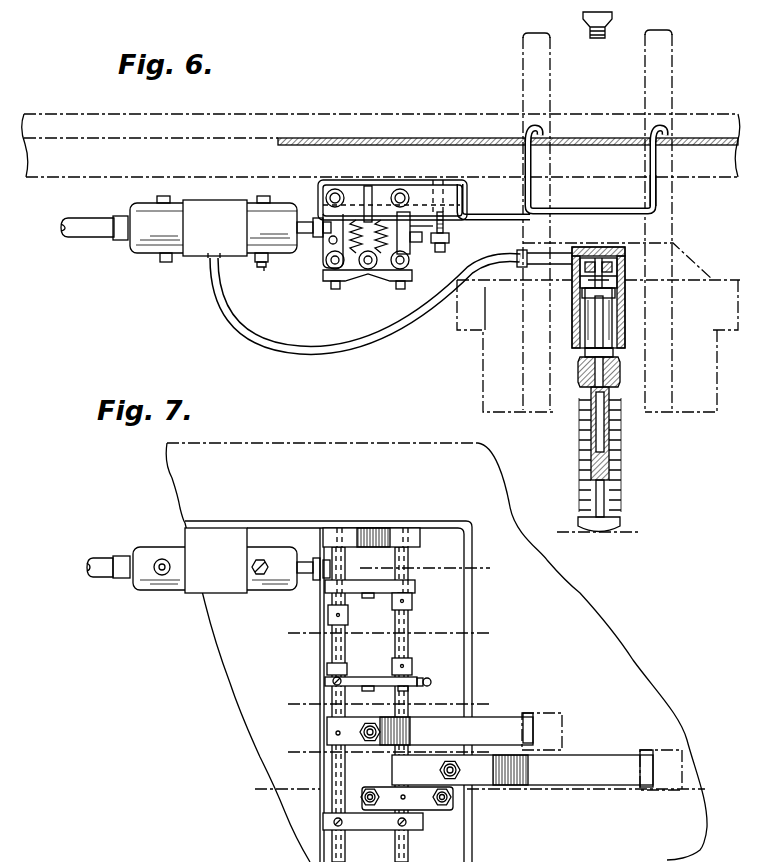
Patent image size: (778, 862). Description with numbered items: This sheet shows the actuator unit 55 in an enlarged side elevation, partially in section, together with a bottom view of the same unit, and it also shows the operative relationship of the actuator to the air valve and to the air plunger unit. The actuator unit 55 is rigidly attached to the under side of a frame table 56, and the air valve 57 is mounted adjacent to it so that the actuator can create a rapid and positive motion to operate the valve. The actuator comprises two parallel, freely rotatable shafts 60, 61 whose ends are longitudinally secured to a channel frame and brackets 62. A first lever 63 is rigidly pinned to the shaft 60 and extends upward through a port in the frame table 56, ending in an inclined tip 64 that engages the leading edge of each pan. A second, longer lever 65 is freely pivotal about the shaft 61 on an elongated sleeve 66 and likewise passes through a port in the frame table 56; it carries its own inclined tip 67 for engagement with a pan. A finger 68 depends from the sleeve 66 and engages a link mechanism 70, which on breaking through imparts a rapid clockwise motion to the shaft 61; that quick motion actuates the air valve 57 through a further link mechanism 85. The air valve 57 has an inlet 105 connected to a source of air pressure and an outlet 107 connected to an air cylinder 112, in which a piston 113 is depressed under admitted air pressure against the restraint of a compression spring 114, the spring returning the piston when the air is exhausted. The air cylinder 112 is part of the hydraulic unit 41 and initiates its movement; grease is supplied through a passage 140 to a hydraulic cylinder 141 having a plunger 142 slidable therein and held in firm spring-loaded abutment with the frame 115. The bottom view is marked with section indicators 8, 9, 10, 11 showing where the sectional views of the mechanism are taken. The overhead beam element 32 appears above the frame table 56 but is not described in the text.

In FIG. 6, the beam 32 is at (463, 141).
In FIG. 6, the frame table 56 is at (300, 176).
In FIG. 6, the actuator unit 55 is at (392, 157).
In FIG. 7, the actuator unit 55 is at (543, 610).
In FIG. 6, the frame 115 is at (672, 81).
In FIG. 6, the first lever 63 is at (531, 172).
In FIG. 7, the first lever 63 is at (507, 719).
In FIG. 6, the inclined tip 64 is at (540, 131).
In FIG. 7, the inclined tip 64 is at (531, 723).
In FIG. 6, the inclined tip 67 is at (661, 132).
In FIG. 7, the inclined tip 67 is at (651, 761).
In FIG. 6, the second lever 65 is at (656, 191).
In FIG. 7, the second lever 65 is at (618, 757).
In FIG. 6, the shaft 61 is at (407, 198).
In FIG. 7, the shaft 61 is at (408, 618).
In FIG. 6, the shaft 60 is at (341, 191).
In FIG. 7, the shaft 60 is at (331, 648).
In FIG. 6, the channel frame and brackets 62 is at (398, 186).
In FIG. 7, the channel frame and brackets 62 is at (414, 829).
In FIG. 6, the link mechanism 85 is at (370, 272).
In FIG. 7, the link mechanism 85 is at (370, 581).
In FIG. 6, the air valve 57 is at (197, 241).
In FIG. 7, the air valve 57 is at (202, 582).
In FIG. 6, the inlet 105 is at (125, 233).
In FIG. 7, the inlet 105 is at (130, 574).
In FIG. 6, the outlet 107 is at (212, 257).
In FIG. 6, the hydraulic unit 41 is at (569, 371).
In FIG. 6, the air cylinder 112 is at (626, 268).
In FIG. 6, the piston 113 is at (623, 290).
In FIG. 6, the passage 140 is at (623, 375).
In FIG. 6, the hydraulic cylinder 141 is at (616, 448).
In FIG. 6, the compression spring 114 is at (618, 427).
In FIG. 6, the plunger 142 is at (603, 497).
In FIG. 7, the link mechanism 70 is at (367, 668).
In FIG. 7, the finger 68 is at (413, 677).
In FIG. 7, the elongated sleeve 66 is at (409, 698).
In FIG. 7, the section line 11- 11 is at (88, 565).
In FIG. 7, the section line 10- 10 is at (288, 649).
In FIG. 7, the section line 9- 9 is at (288, 680).
In FIG. 7, the section line 8- 8 is at (288, 768).